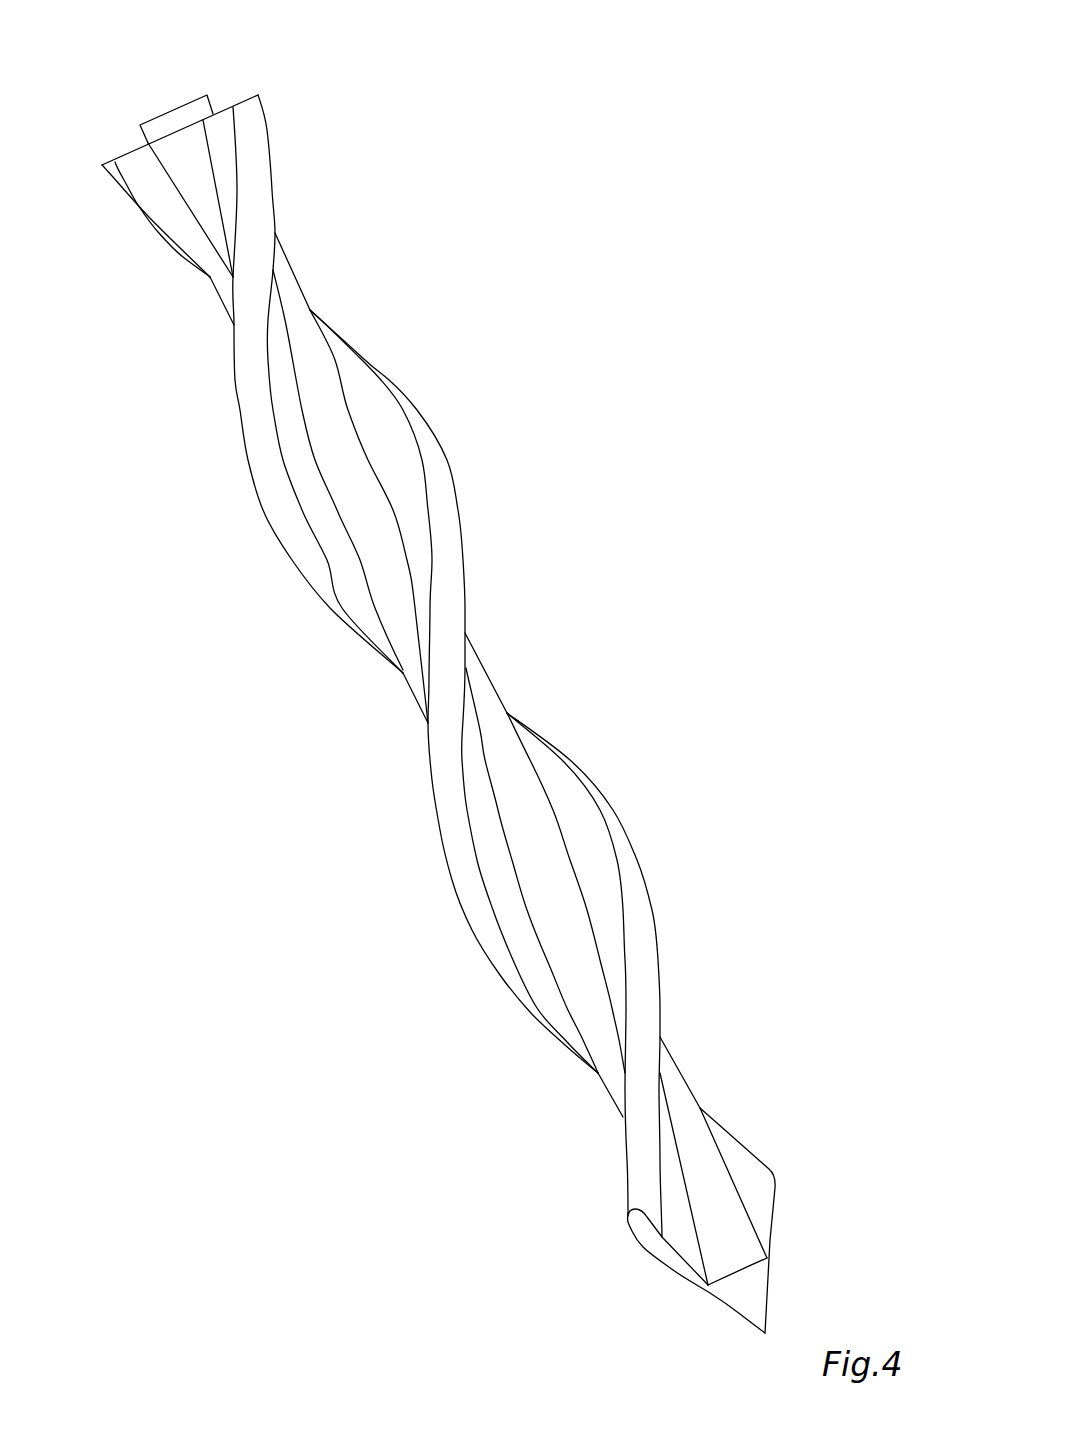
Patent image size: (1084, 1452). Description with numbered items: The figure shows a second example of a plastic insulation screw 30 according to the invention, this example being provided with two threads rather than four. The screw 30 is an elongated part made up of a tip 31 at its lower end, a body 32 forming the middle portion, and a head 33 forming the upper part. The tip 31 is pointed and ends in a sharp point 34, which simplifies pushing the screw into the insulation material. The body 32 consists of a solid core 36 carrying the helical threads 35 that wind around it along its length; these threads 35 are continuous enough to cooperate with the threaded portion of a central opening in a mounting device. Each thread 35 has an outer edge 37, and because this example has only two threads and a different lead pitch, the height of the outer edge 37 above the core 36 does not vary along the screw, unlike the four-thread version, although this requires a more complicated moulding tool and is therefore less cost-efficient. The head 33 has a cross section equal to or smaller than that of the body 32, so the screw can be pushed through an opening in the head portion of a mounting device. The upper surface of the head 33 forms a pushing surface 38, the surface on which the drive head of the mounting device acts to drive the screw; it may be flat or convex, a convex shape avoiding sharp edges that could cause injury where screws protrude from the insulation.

The twisted tape element 30 is at (487, 197).
The tip 31 is at (802, 1227).
The body 32 is at (555, 543).
The head 33 is at (270, 70).
The sharp point 34 is at (753, 1338).
The thread 35 is at (575, 813).
The core 36 is at (500, 730).
The outer edge 37 is at (630, 840).
The pushing surface 38 is at (178, 100).